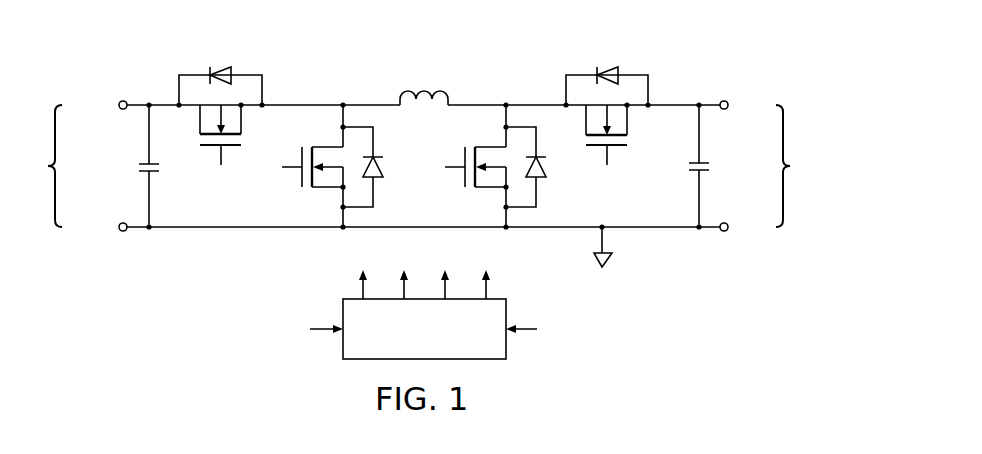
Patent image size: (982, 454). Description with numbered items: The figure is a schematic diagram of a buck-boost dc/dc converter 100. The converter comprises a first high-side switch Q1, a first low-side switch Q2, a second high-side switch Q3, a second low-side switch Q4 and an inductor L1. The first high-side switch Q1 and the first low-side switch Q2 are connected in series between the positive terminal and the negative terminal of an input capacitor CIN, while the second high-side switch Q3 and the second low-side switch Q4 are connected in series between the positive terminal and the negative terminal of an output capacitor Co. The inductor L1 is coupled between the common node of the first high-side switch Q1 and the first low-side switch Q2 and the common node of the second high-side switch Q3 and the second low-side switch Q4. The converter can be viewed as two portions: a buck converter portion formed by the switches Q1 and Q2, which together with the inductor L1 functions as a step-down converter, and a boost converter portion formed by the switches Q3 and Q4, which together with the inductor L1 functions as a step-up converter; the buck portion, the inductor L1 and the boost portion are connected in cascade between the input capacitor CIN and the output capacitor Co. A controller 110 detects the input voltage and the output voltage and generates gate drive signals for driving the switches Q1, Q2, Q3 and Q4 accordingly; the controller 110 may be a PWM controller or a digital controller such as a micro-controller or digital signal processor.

The buck-boost dc/dc converter 100 is at (516, 60).
The controller 110 is at (407, 340).
The first high-side switch Q1 is at (220, 129).
The first low-side switch Q2 is at (316, 166).
The second high-side switch Q3 is at (607, 129).
The second low-side switch Q4 is at (479, 166).
The inductor L1 is at (424, 86).
The input capacitor CIN is at (132, 166).
The output capacitor Co is at (686, 166).